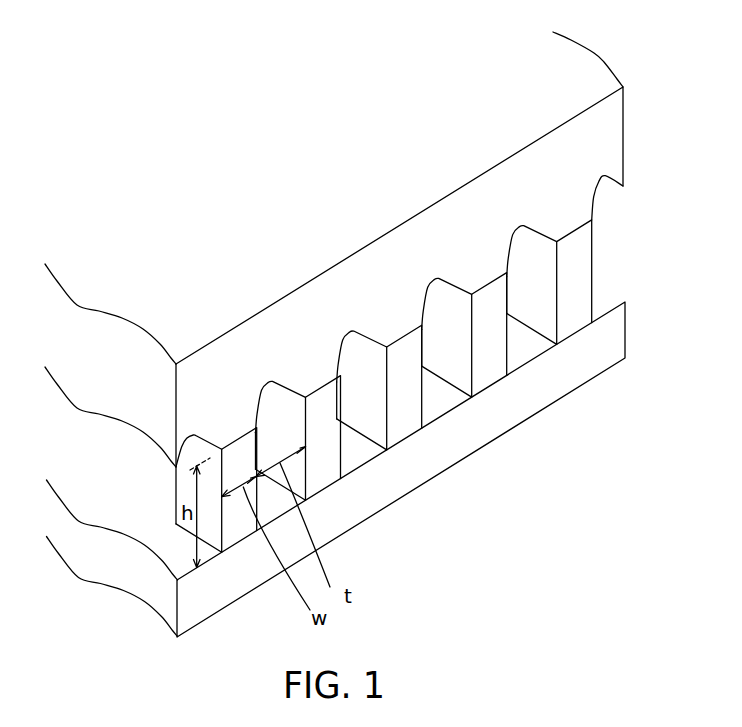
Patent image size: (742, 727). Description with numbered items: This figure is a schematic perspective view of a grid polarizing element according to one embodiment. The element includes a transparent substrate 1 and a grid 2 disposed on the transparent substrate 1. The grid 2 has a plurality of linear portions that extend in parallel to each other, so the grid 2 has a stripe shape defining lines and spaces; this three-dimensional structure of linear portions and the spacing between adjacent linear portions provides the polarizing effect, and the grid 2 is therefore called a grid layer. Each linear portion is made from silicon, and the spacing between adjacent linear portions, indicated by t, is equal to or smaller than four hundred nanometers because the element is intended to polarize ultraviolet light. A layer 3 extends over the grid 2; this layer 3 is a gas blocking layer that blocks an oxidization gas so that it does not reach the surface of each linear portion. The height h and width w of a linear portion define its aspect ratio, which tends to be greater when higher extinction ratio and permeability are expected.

The transparent substrate 1 is at (560, 380).
The grid 2 is at (621, 263).
The layer 3 is at (609, 135).